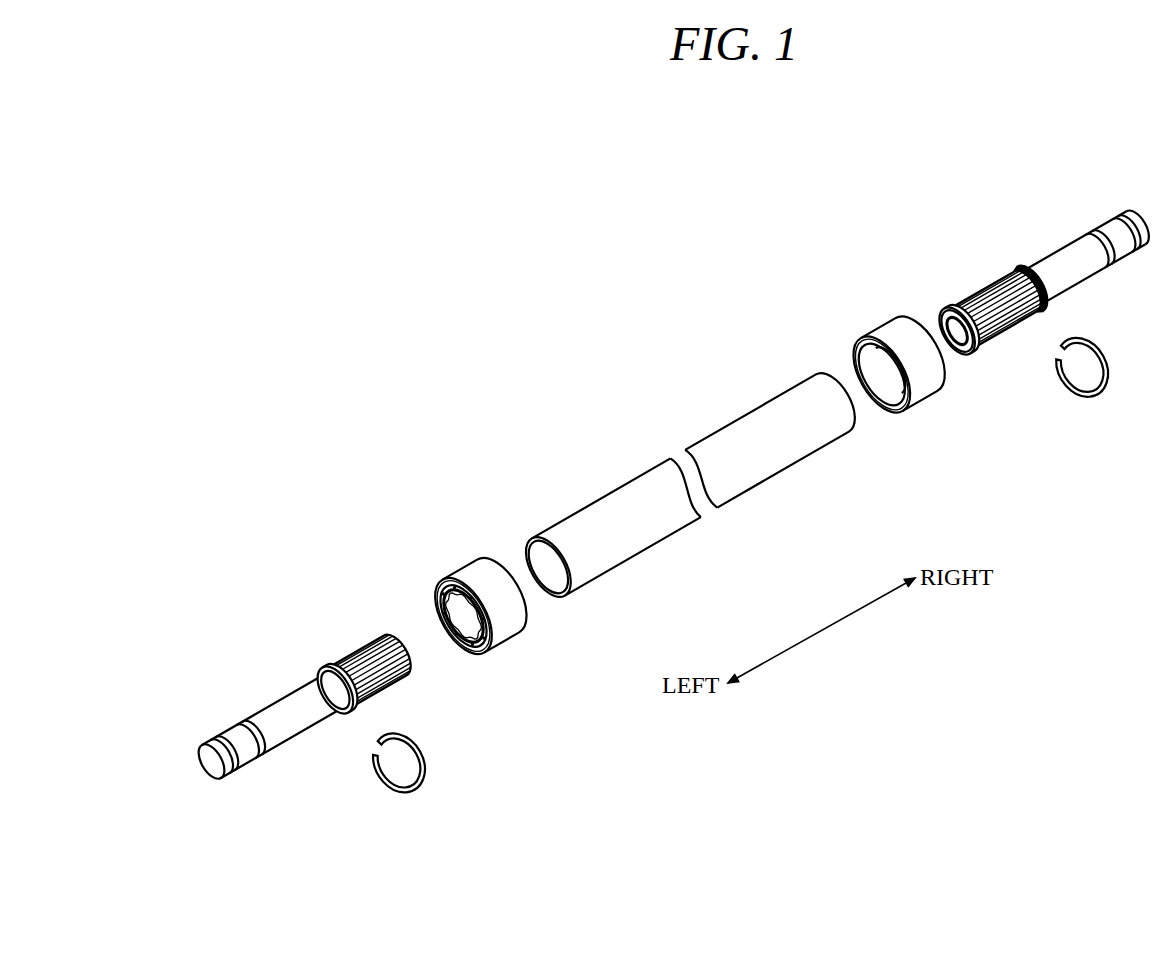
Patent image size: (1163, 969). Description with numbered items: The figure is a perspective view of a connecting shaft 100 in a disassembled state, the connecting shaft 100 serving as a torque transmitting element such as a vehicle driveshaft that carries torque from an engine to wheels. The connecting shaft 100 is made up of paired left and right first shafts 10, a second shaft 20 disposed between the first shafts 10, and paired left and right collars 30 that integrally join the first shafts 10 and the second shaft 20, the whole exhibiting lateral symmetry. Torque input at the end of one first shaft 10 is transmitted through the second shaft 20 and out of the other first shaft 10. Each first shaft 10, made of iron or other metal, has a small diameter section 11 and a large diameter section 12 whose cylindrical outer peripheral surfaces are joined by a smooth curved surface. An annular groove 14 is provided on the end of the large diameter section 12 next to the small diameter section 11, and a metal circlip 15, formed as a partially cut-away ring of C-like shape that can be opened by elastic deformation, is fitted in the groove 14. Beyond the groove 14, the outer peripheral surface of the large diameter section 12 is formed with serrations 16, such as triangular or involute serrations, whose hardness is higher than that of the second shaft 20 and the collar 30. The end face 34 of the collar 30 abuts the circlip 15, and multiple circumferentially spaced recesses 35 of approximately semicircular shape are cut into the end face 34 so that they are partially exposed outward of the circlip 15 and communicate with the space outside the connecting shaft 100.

The connecting shaft 100 is at (638, 407).
The first shaft 10 is at (278, 702).
The small diameter section 11 is at (287, 725).
The large diameter section 12 is at (387, 695).
The annular groove 14 is at (330, 668).
The circlip 15 is at (423, 790).
The serrations 16 is at (365, 653).
The second shaft 20 is at (730, 425).
The collar 30 is at (460, 572).
The end face 34 is at (478, 652).
The recesses 35 is at (435, 617).